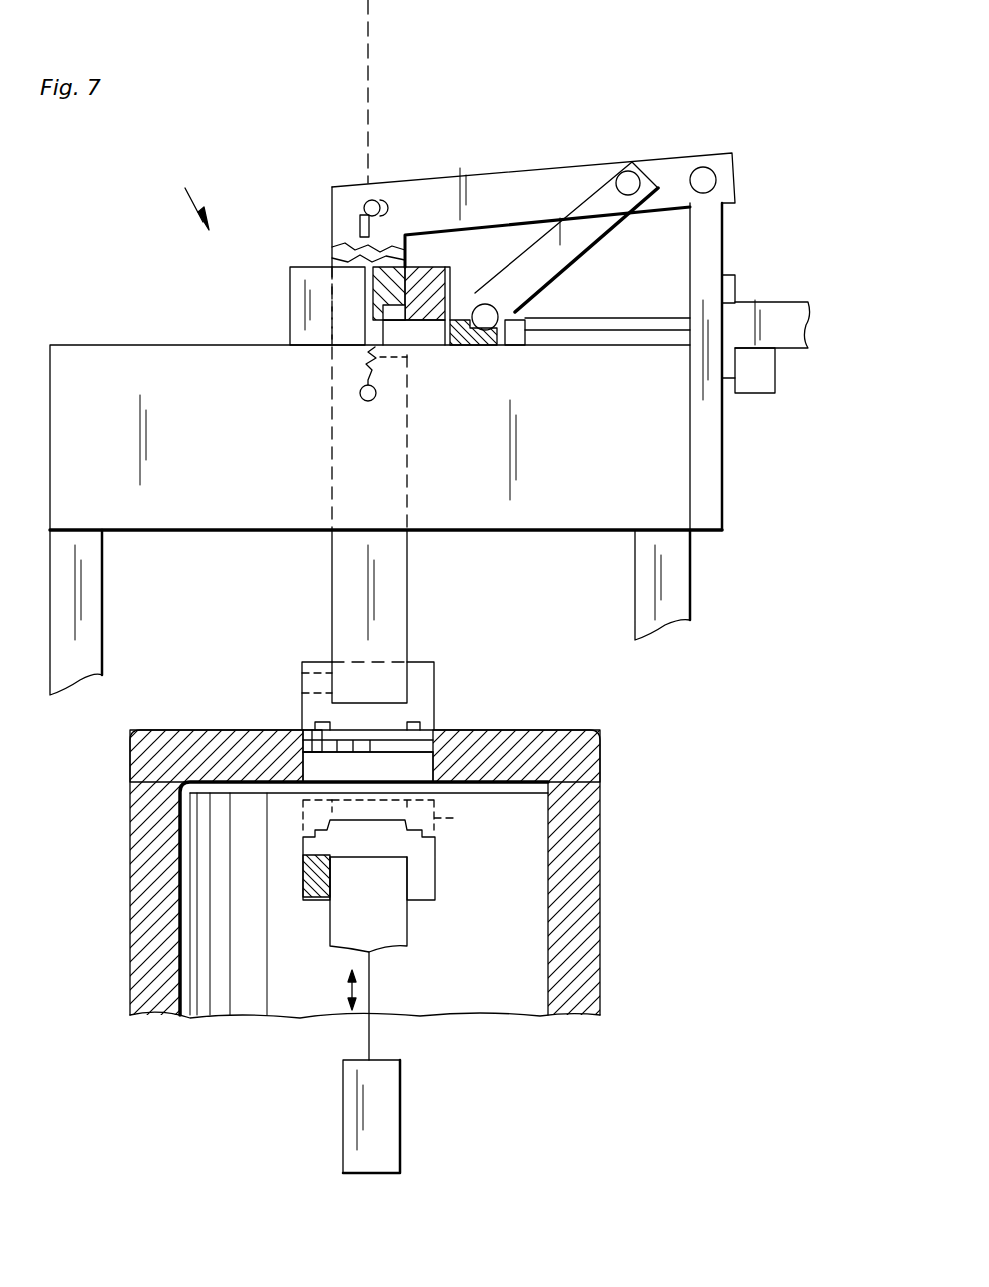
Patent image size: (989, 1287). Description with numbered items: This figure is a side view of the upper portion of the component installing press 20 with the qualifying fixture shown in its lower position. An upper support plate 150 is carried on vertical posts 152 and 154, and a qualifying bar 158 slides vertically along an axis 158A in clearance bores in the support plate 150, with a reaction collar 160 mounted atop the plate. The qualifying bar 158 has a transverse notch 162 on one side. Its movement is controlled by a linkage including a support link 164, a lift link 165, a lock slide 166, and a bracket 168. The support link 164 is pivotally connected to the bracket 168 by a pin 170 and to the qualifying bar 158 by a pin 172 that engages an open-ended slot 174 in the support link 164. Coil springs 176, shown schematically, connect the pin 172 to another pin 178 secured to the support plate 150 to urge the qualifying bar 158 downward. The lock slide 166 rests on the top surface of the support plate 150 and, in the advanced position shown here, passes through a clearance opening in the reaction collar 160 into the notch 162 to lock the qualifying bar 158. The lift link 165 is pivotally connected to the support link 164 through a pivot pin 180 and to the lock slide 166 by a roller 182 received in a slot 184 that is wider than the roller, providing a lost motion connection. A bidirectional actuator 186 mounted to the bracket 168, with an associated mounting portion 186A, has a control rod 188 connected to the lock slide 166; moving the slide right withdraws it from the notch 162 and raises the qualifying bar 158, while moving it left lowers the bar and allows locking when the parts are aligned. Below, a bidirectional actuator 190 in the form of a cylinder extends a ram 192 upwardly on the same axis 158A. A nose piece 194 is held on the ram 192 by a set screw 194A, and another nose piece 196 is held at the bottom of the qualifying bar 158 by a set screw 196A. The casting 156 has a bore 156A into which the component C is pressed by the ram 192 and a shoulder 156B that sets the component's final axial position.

The component installing press 20 is at (177, 200).
The axis 158A is at (372, 40).
The pin 172 is at (378, 200).
The open-ended slot 174 is at (352, 212).
The support link 164 is at (535, 205).
The pivot pin 180 is at (628, 171).
The pin 170 is at (716, 180).
The bracket 168 is at (710, 238).
The lift link 165 is at (578, 240).
The transverse notch 162 is at (440, 278).
The roller 182 is at (505, 312).
The lock slide 166 is at (415, 347).
The slot 184 is at (505, 340).
The control rod 188 is at (660, 328).
The bidirectional actuator 186 is at (808, 338).
The actuator mount 186A is at (760, 375).
The reaction collar 160 is at (288, 315).
The coil springs 176 is at (373, 350).
The pin 178 is at (360, 395).
The upper support plate 150 is at (580, 460).
The qualifying bar 158 is at (390, 580).
The vertical post 152 is at (104, 648).
The vertical post 154 is at (635, 608).
The nose piece 196 is at (436, 695).
The set screw 196A is at (302, 682).
The shoulder 156B is at (315, 738).
The bore 156A is at (318, 810).
The component C is at (405, 820).
The casting 156 is at (600, 838).
The nose piece 194 is at (436, 872).
The set screw 194A is at (303, 895).
The ram 192 is at (408, 930).
The bidirectional actuator 190 is at (400, 1118).